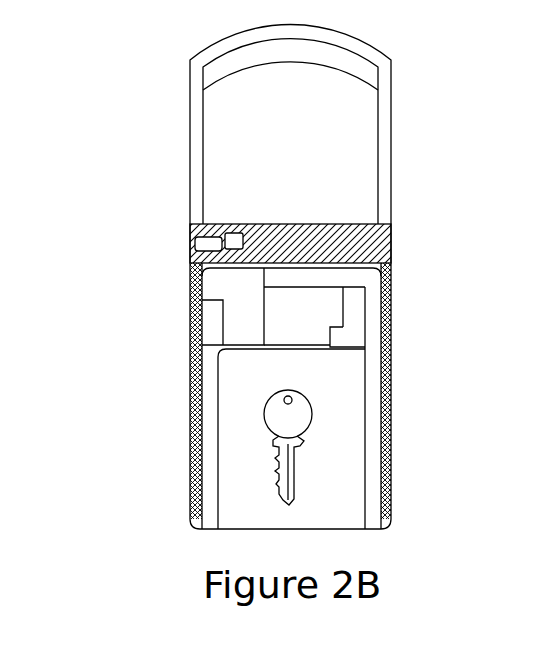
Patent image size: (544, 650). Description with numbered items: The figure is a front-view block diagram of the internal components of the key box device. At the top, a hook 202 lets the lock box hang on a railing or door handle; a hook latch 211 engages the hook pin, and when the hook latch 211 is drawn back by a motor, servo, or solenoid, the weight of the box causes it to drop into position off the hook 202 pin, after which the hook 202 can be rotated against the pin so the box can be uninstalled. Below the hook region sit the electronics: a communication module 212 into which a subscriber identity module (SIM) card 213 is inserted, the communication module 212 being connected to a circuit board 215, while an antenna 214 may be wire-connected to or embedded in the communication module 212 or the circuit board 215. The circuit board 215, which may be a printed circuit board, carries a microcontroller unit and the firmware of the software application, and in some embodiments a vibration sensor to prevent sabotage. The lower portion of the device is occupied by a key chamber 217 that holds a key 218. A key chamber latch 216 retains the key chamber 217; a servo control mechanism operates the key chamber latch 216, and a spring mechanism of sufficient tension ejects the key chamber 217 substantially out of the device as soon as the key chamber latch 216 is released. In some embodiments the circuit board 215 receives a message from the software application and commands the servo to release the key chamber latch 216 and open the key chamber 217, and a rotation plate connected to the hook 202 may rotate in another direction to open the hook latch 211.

The hook 202 is at (205, 245).
The hook latch 211 is at (236, 236).
The communication module 212 is at (208, 288).
The subscriber identity module (SIM) card 213 is at (211, 325).
The antenna 214 is at (350, 290).
The circuit board 215 is at (361, 308).
The key chamber latch 216 is at (343, 338).
The key chamber 217 is at (343, 383).
The key 218 is at (294, 418).